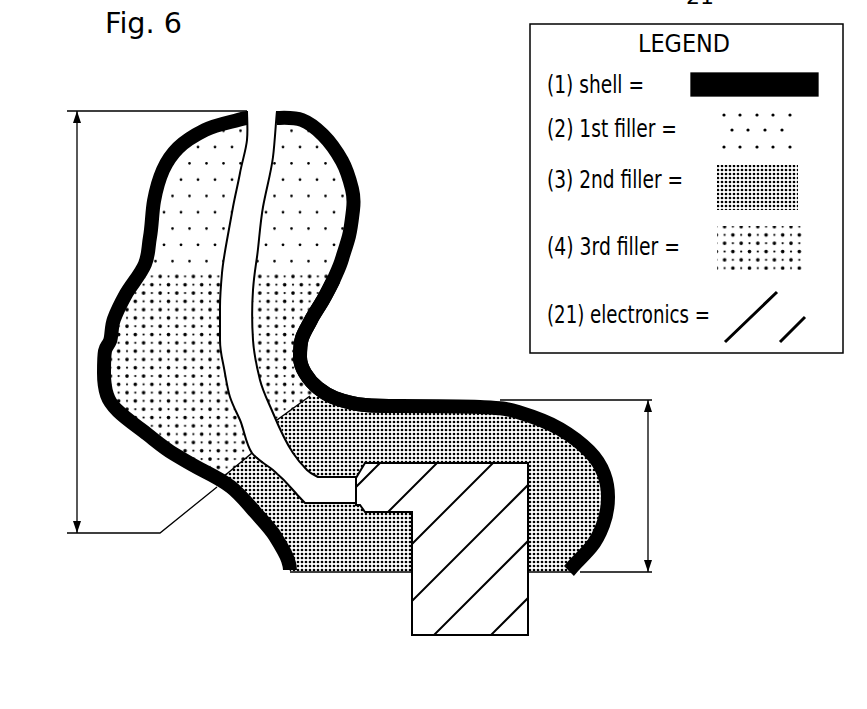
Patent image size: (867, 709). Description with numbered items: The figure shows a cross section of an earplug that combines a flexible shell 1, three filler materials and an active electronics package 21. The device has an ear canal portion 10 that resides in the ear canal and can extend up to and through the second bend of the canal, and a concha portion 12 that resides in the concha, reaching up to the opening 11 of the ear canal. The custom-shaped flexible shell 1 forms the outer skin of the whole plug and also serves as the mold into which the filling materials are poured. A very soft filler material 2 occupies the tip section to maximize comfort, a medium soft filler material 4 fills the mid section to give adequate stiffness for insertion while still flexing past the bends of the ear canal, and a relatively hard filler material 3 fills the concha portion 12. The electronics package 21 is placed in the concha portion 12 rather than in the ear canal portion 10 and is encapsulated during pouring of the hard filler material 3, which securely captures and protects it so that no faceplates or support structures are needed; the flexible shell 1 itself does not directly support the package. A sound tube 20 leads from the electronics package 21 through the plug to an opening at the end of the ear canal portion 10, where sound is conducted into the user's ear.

The flexible shell 1 is at (347, 152).
The filler material 2 is at (290, 223).
The filler material 3 is at (393, 437).
The filler material 4 is at (313, 292).
The ear canal portion 10 is at (77, 303).
The opening of the ear canal 11 is at (322, 385).
The concha portion 12 is at (648, 478).
The sound tube 20 is at (252, 122).
The electronics package 21 is at (517, 607).